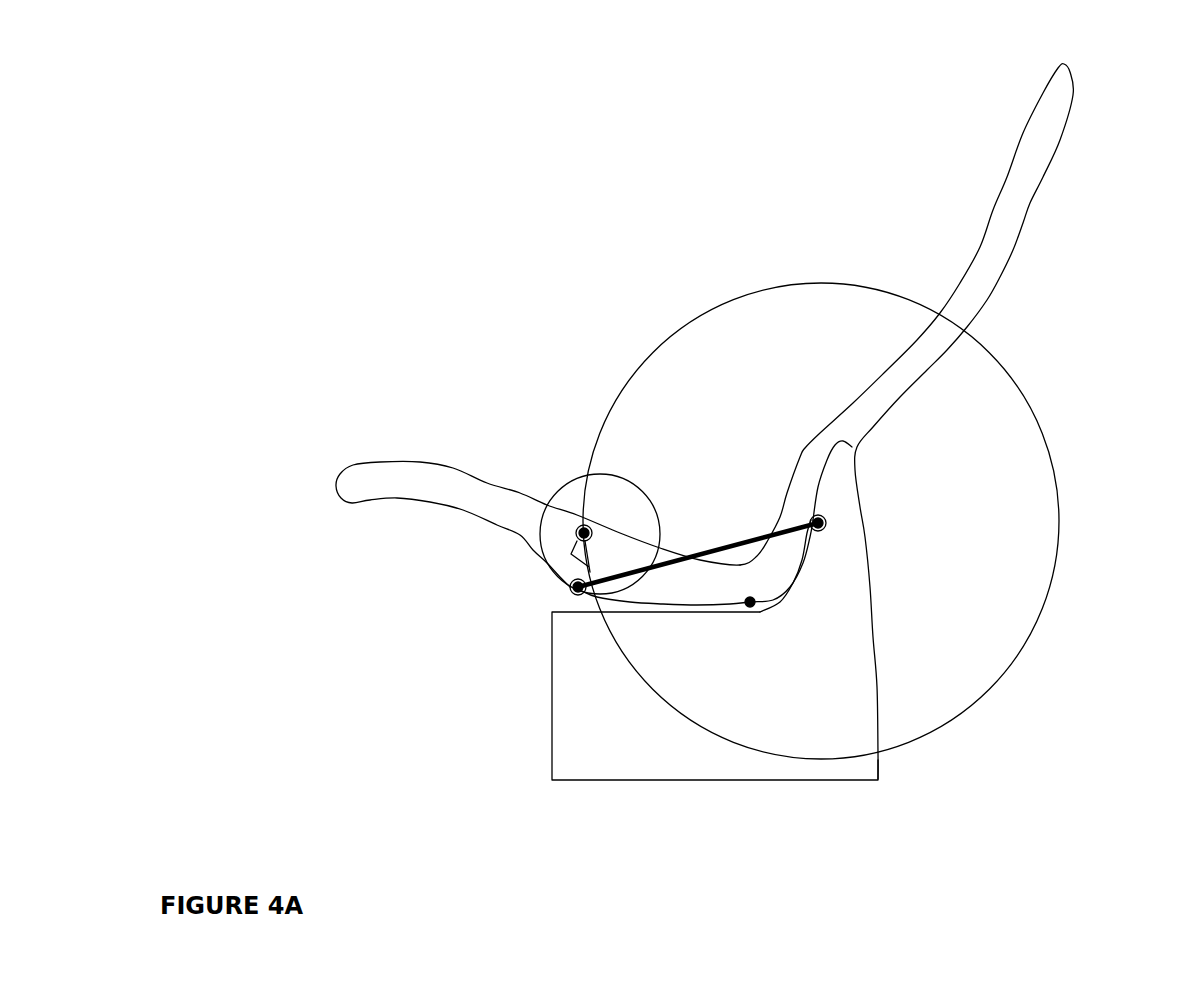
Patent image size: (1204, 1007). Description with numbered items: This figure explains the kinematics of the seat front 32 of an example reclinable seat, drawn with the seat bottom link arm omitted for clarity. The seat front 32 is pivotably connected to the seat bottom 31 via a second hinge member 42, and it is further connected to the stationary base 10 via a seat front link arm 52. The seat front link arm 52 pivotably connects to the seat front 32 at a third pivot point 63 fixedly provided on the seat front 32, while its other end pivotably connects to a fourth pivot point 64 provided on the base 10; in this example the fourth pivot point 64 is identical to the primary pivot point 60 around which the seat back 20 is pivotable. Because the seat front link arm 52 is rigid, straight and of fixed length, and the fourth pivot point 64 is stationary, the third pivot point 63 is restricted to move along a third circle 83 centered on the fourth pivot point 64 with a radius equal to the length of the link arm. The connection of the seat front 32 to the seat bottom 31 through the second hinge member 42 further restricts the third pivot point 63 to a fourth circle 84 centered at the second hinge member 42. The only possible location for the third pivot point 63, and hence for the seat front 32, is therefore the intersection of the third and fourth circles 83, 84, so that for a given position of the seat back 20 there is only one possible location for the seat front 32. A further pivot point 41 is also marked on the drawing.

The stationary base 10 is at (873, 640).
The seat back 20 is at (1030, 203).
The seat bottom 31 is at (645, 576).
The seat front 32 is at (352, 503).
The pivot point 41 is at (752, 602).
The second hinge member 42 is at (585, 533).
The seat front link arm 52 is at (712, 562).
The primary pivot point 60 is at (880, 526).
The third pivot point 63 is at (576, 590).
The fourth pivot point 64 is at (823, 528).
The third circle 83 is at (1047, 442).
The fourth circle 84 is at (588, 476).